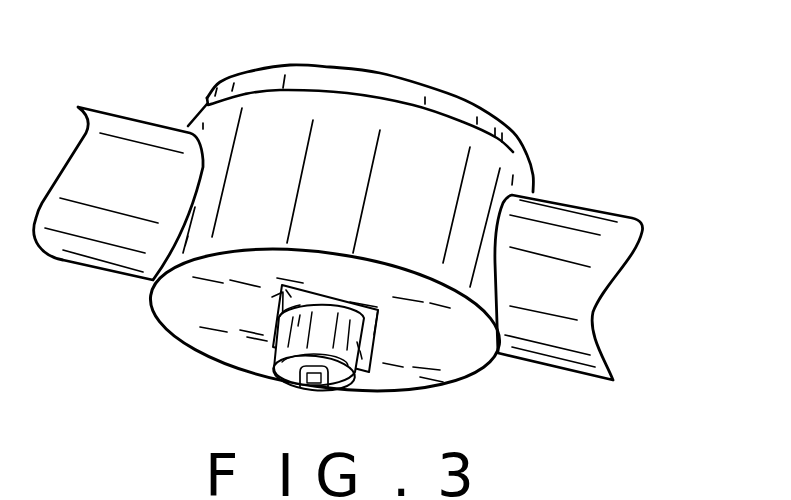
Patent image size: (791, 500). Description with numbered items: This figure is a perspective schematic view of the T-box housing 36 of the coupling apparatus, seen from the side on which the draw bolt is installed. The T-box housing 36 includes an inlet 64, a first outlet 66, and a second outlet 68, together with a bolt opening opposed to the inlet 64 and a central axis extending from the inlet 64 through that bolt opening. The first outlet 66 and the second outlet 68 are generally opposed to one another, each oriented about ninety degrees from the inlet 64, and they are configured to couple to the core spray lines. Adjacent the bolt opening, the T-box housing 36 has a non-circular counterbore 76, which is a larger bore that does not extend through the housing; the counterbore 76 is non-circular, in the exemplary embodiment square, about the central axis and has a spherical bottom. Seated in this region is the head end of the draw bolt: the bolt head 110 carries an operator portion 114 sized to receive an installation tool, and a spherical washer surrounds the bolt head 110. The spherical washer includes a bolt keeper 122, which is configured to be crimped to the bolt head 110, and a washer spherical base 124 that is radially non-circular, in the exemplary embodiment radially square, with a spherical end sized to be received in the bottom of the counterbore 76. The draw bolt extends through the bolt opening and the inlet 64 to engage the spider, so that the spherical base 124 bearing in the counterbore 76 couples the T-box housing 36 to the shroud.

The T-box housing 36 is at (530, 90).
The inlet 64 is at (388, 78).
The first outlet 66 is at (585, 207).
The second outlet 68 is at (130, 117).
The non-circular counterbore 76 is at (380, 333).
The bolt head 110 is at (331, 390).
The operator portion 114 is at (305, 388).
The bolt keeper 122 is at (283, 308).
The washer spherical base 124 is at (272, 339).